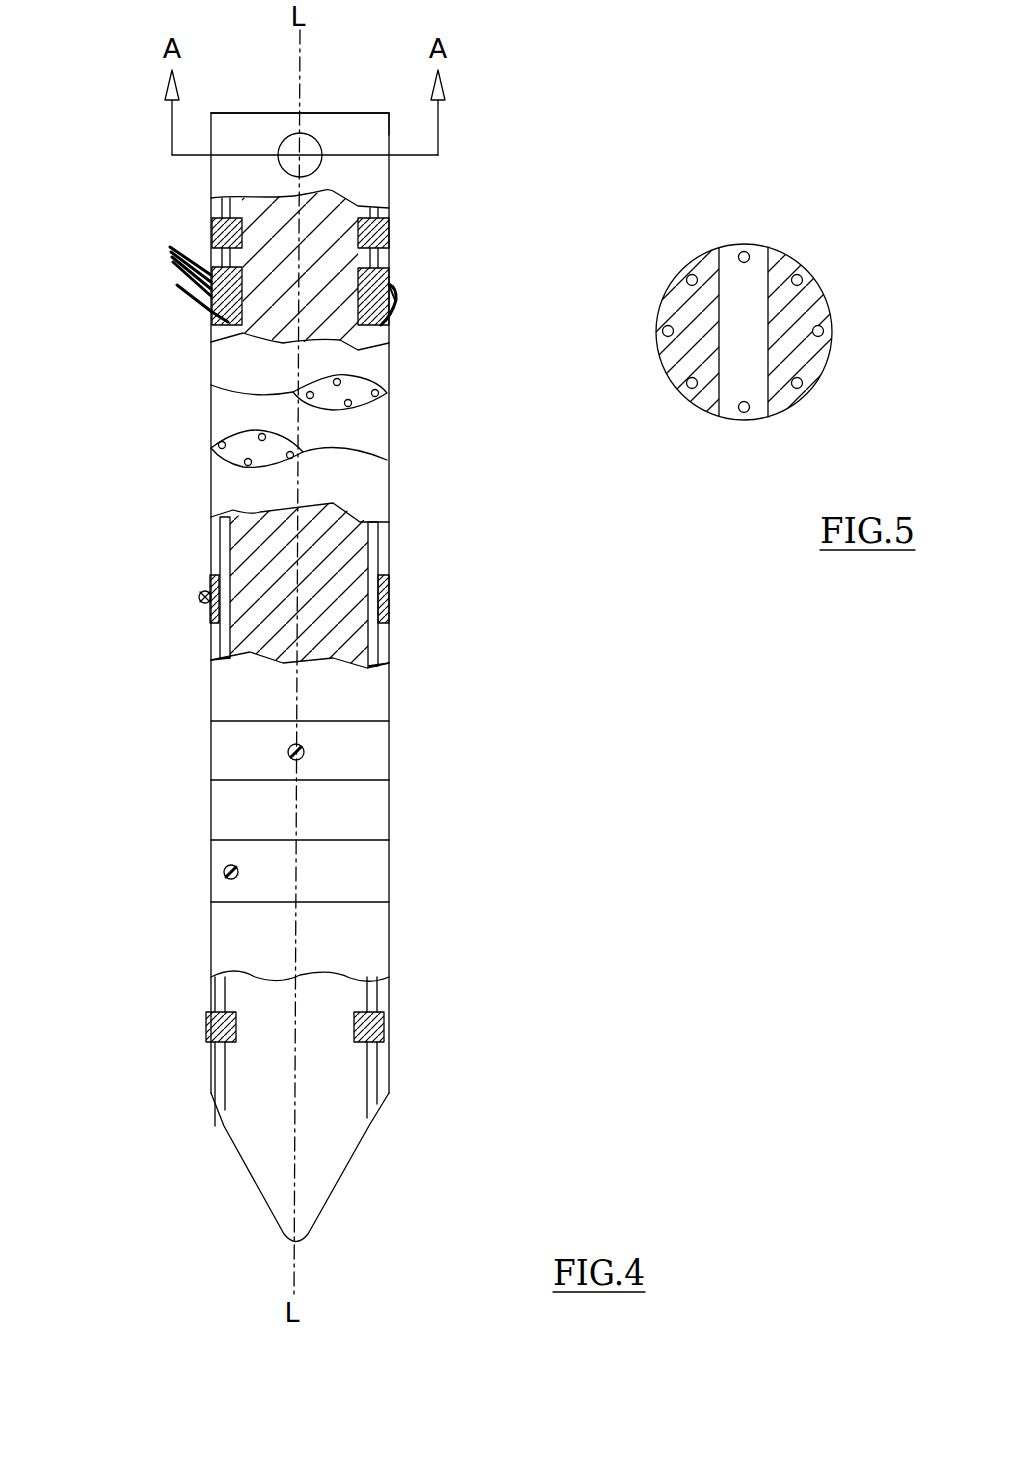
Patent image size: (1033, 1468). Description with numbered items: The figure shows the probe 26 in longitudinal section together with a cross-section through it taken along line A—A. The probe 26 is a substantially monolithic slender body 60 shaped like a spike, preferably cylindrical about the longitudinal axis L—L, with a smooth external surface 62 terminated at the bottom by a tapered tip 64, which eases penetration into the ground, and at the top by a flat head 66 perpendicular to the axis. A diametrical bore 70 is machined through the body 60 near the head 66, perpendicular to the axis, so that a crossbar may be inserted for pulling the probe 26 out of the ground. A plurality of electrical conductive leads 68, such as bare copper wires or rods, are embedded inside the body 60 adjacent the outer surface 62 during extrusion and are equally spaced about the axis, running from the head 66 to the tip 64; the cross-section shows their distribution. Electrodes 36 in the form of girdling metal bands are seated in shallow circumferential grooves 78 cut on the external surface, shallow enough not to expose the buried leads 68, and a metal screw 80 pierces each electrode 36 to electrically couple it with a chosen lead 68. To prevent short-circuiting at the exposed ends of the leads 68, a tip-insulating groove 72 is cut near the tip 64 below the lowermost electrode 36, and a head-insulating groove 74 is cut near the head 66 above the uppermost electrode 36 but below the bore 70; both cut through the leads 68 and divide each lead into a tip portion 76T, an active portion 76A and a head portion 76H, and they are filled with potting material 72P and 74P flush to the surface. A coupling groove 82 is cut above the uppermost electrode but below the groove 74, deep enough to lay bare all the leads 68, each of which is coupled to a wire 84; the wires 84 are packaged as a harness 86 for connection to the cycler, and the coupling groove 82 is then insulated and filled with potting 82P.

In FIG. 4, the probe 26 is at (236, 66).
In FIG. 4, the electrode 36 is at (212, 610).
In FIG. 4, the body 60 is at (510, 837).
In FIG. 4, the external surface 62 is at (390, 935).
In FIG. 5, the external surface 62 is at (828, 368).
In FIG. 4, the tapered tip 64 is at (335, 1196).
In FIG. 4, the flat head 66 is at (378, 112).
In FIG. 4, the electrical conductive leads 68 is at (382, 537).
In FIG. 5, the electrical conductive leads 68 is at (795, 276).
In FIG. 4, the diametrical bore 70 is at (290, 133).
In FIG. 5, the diametrical bore 70 is at (757, 209).
In FIG. 4, the tip-insulating groove 72 is at (388, 1032).
In FIG. 4, the potting material 72P is at (388, 1022).
In FIG. 4, the head-insulating groove 74 is at (390, 247).
In FIG. 4, the potting material 74P is at (390, 237).
In FIG. 4, the active portion 76A is at (382, 645).
In FIG. 4, the head portion 76H is at (212, 210).
In FIG. 4, the tip portion 76T is at (378, 1068).
In FIG. 4, the shallow circumferential groove 78 is at (382, 563).
In FIG. 4, the screw 80 is at (208, 592).
In FIG. 4, the coupling groove 82 is at (392, 284).
In FIG. 4, the potting 82P is at (390, 280).
In FIG. 4, the wire 84 is at (197, 295).
In FIG. 4, the harness 86 is at (128, 262).